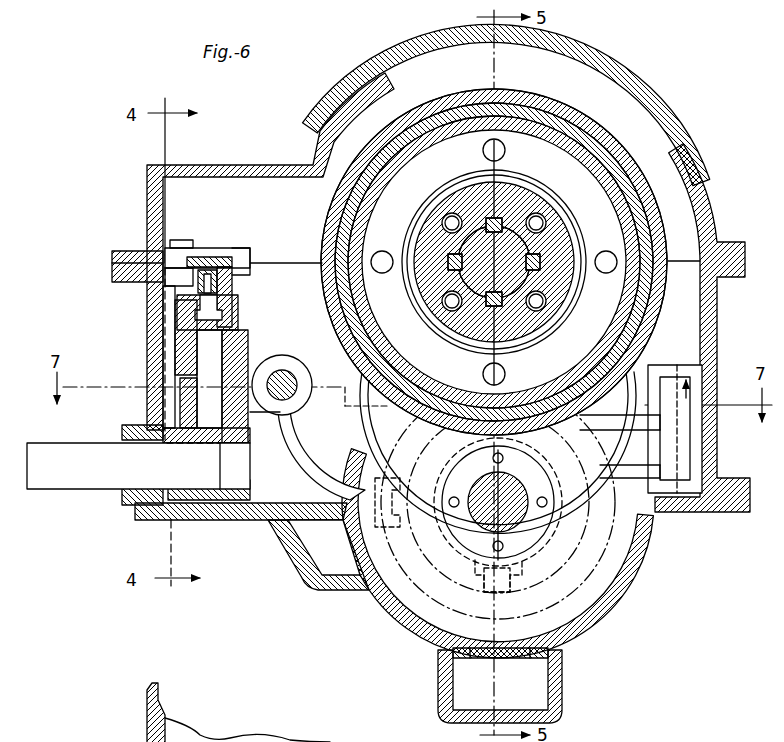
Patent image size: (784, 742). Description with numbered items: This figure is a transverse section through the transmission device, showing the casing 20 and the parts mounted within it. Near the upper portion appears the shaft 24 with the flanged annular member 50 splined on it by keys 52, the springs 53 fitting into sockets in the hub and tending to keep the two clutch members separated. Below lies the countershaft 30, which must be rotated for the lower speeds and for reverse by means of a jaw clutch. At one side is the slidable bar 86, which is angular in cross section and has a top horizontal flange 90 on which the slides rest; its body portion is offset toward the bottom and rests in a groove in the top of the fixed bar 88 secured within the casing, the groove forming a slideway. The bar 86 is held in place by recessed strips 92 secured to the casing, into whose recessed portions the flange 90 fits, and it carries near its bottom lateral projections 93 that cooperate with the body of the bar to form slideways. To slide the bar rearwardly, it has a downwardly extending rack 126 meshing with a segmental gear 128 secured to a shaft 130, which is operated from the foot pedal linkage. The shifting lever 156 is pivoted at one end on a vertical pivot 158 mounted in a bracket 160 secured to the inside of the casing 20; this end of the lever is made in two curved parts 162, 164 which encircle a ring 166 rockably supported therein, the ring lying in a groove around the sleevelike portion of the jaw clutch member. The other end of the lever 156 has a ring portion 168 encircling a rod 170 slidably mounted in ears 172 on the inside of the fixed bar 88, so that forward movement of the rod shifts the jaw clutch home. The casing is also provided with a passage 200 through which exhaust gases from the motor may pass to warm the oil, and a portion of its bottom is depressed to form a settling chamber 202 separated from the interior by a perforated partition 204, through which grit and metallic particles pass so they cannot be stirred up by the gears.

The casing 20 is at (719, 311).
The shaft 24 is at (545, 245).
The countershaft 30 is at (522, 490).
The flanged annular member 50 is at (562, 288).
The keys 52 is at (500, 220).
The springs 53 is at (442, 221).
The slidable bar 86 is at (234, 306).
The fixed bar 88 is at (250, 345).
The top horizontal flange 90 is at (218, 258).
The recessed strips 92 is at (200, 248).
The lateral projections 93 is at (163, 323).
The rack 126 is at (180, 346).
The segmental gear 128 is at (182, 398).
The shaft 130 is at (84, 480).
The shifting lever 156 is at (297, 440).
The vertical pivot 158 is at (712, 358).
The bracket 160 is at (698, 384).
The curved part 162 is at (618, 418).
The curved part 164 is at (640, 460).
The ring 166 is at (522, 530).
The ring portion 168 is at (284, 370).
The rod 170 is at (296, 380).
The ears 172 is at (262, 415).
The passage 200 is at (310, 566).
The settling chamber 202 is at (560, 683).
The perforated partition 204 is at (470, 660).